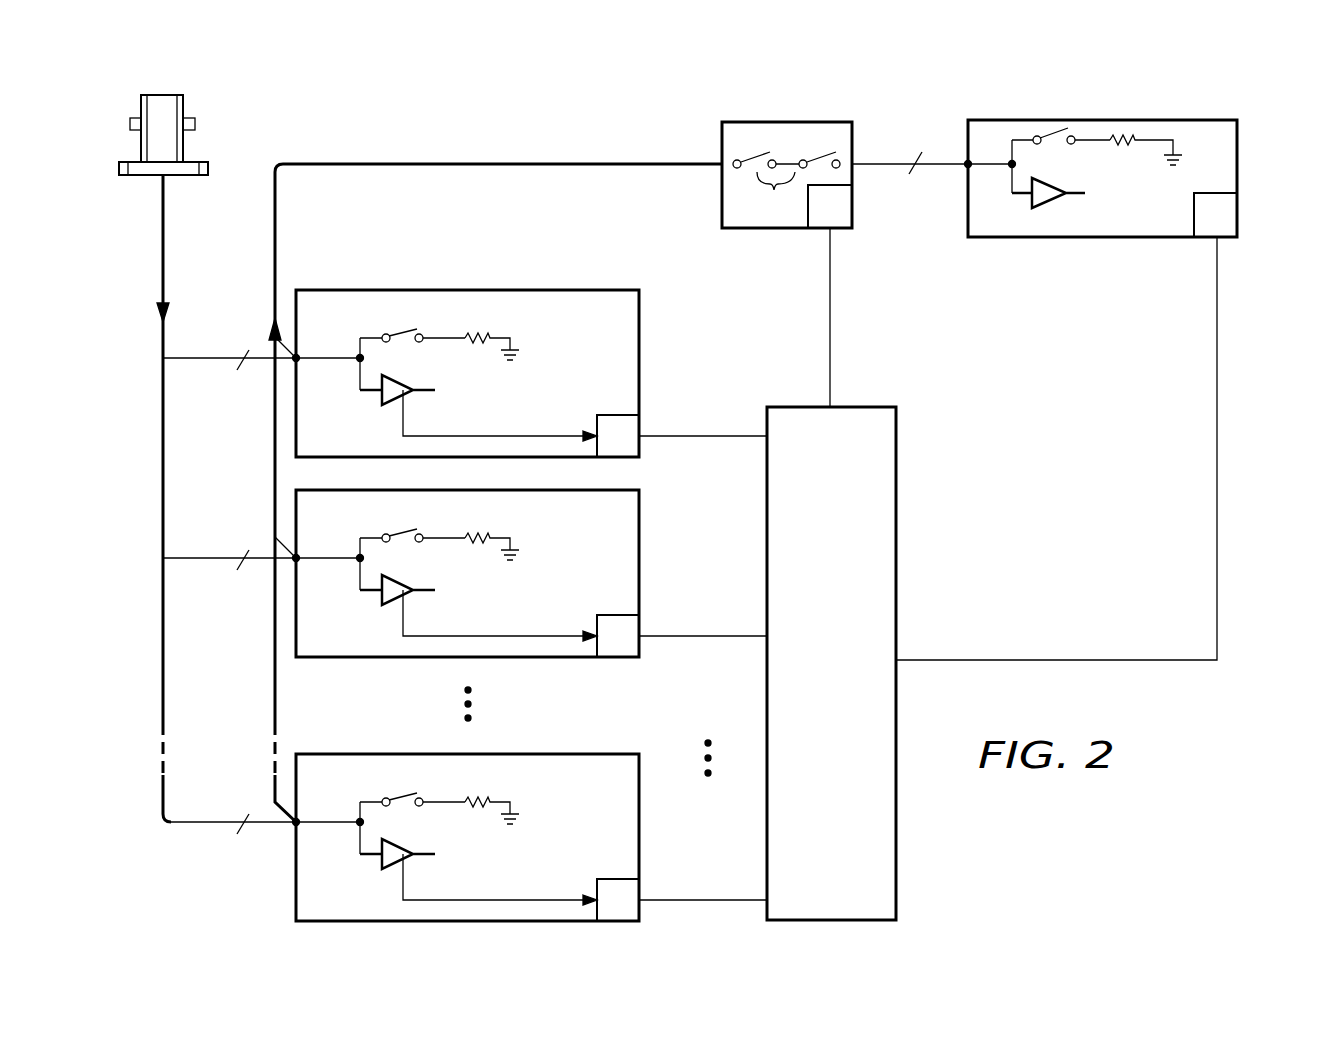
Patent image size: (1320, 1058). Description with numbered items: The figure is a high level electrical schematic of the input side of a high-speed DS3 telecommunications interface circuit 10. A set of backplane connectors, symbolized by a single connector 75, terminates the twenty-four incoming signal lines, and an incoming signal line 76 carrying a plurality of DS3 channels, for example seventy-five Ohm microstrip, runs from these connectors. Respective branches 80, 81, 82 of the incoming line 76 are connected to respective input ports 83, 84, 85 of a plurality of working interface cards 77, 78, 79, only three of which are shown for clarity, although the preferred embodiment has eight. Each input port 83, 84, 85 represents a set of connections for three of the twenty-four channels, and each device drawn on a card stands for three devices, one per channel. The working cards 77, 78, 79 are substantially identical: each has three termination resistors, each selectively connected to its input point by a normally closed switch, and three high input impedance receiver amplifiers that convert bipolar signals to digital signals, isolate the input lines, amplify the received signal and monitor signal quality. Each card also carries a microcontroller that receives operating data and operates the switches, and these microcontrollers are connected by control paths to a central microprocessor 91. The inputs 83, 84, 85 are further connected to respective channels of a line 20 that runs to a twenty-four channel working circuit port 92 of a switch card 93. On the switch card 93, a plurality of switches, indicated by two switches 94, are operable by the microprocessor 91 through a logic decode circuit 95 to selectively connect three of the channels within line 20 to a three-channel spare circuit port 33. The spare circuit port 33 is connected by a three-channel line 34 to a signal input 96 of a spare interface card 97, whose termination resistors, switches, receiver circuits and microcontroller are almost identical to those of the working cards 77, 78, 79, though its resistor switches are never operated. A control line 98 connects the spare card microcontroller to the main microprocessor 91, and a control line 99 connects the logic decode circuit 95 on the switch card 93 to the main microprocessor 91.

The interface circuit 10 is at (344, 140).
The line 20 is at (463, 164).
The spare circuit port 33 is at (853, 162).
The three-channel line 34 is at (936, 163).
The backplane connector 75 is at (141, 141).
The incoming signal line 76 is at (163, 417).
The working interface card 77 is at (495, 380).
The working interface card 78 is at (495, 580).
The working interface card 79 is at (495, 844).
The branch of incoming line 80 is at (200, 361).
The branch of incoming line 81 is at (200, 561).
The branch of incoming line 82 is at (195, 825).
The input port 83 is at (298, 358).
The input port 84 is at (298, 558).
The input port 85 is at (298, 822).
The central microprocessor 91 is at (844, 697).
The working circuit port 92 is at (722, 175).
The switch card 93 is at (722, 142).
The switch 94 is at (786, 187).
The logic decode circuit 95 is at (843, 213).
The signal input 96 is at (968, 166).
The spare interface card 97 is at (1114, 193).
The control line 98 is at (1043, 661).
The control line 99 is at (830, 310).